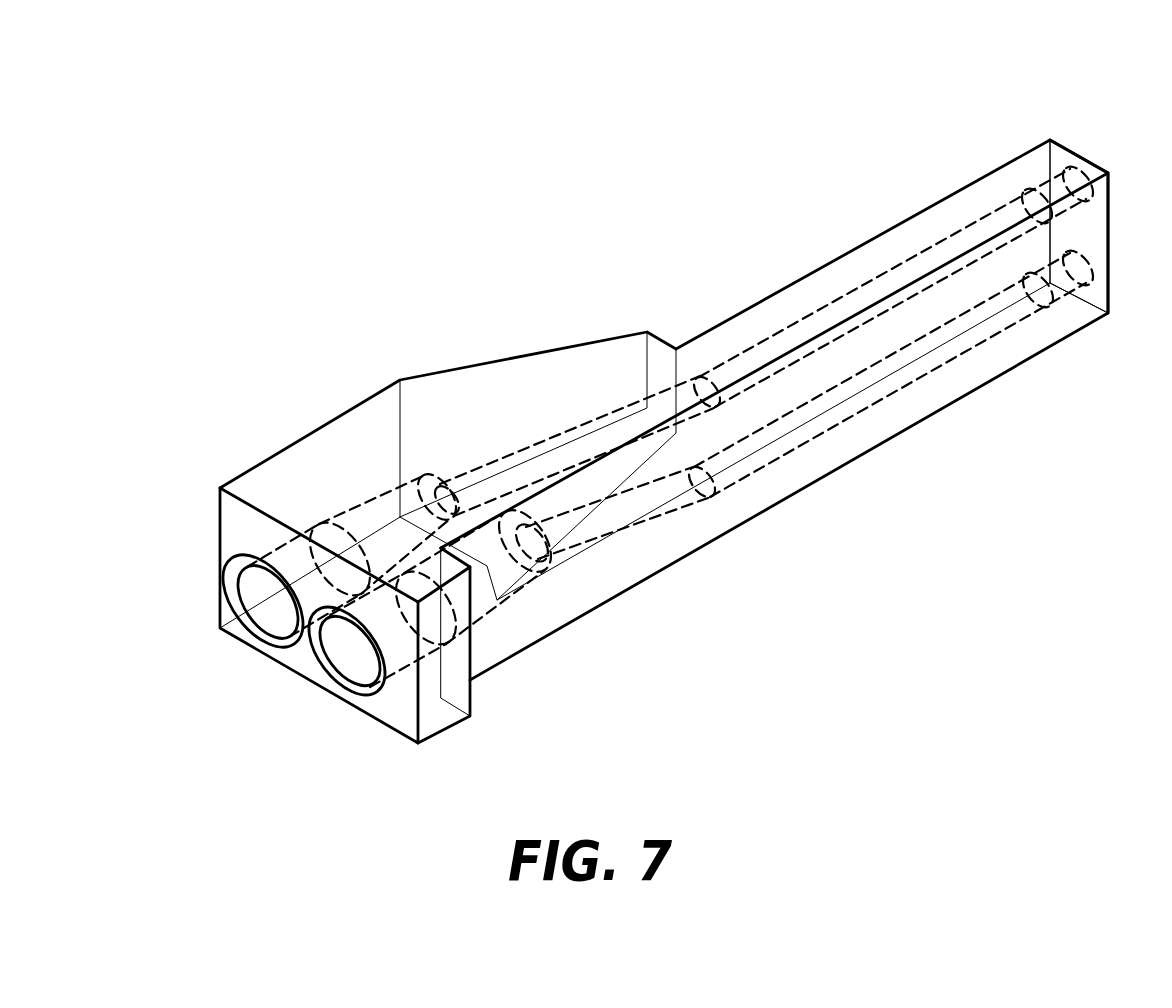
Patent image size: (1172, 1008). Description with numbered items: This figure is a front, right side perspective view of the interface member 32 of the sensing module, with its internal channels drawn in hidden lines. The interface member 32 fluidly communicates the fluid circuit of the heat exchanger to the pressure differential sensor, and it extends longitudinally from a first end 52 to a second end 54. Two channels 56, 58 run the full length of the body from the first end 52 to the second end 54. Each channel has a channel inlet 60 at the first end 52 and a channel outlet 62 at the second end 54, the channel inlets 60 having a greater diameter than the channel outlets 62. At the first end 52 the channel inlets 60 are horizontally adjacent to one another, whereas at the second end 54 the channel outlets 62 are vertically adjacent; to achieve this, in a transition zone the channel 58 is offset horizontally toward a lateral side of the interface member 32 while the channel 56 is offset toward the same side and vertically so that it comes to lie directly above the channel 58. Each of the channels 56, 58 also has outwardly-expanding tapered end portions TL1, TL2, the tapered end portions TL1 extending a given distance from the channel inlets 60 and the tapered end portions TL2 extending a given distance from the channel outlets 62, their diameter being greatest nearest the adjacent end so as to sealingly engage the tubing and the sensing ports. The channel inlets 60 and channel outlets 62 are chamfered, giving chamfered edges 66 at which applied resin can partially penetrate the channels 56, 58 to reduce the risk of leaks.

The interface member 32 is at (793, 150).
The first end 52 is at (232, 515).
The second end 54 is at (1075, 153).
The channel 56 is at (265, 618).
The channel 58 is at (357, 668).
The channel inlet 60 is at (228, 612).
The channel outlet 62 is at (1092, 168).
The chamfered edge 66 is at (322, 664).
The tapered end portion TL1 is at (283, 542).
The tapered end portion TL2 is at (1051, 174).